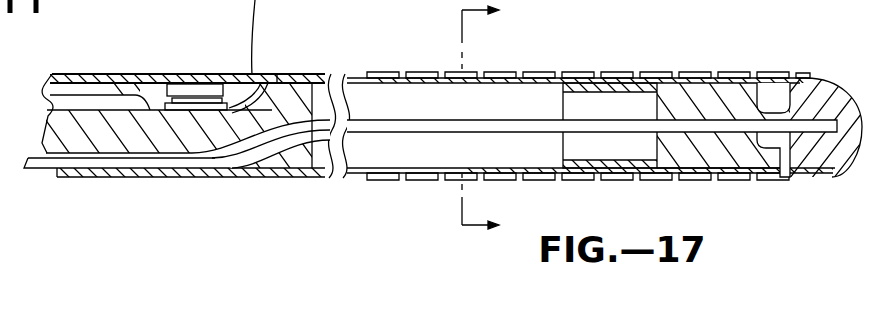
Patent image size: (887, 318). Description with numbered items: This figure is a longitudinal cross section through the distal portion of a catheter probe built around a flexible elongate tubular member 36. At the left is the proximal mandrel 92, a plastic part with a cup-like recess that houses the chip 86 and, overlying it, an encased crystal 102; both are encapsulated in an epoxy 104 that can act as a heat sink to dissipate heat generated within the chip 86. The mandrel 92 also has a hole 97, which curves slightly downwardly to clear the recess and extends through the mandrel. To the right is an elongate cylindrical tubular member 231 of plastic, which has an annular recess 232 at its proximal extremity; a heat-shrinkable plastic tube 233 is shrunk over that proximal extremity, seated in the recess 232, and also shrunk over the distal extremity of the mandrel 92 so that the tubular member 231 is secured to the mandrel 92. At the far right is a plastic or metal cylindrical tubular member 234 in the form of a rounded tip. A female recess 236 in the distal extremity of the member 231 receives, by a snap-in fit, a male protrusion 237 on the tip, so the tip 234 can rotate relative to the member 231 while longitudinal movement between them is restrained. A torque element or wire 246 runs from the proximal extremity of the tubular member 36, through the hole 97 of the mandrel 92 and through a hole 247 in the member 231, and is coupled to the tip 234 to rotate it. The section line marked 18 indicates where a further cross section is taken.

The flexible elongate tubular member 36 is at (88, 178).
The epoxy 104 is at (143, 98).
The encased crystal 102 is at (215, 88).
The chip 86 is at (192, 104).
The hole 97 is at (200, 164).
The proximal mandrel 92 is at (298, 164).
The plastic tube 233 is at (405, 78).
The annular recess 232 is at (575, 87).
The hole 247 is at (712, 120).
The cylindrical tubular member 234 is at (840, 100).
The female recess 236 is at (760, 110).
The male protrusion 237 is at (783, 165).
The elongate cylindrical tubular member 231 is at (728, 160).
The torque element or wire 246 is at (40, 165).
The section line 18- 18 is at (491, 119).